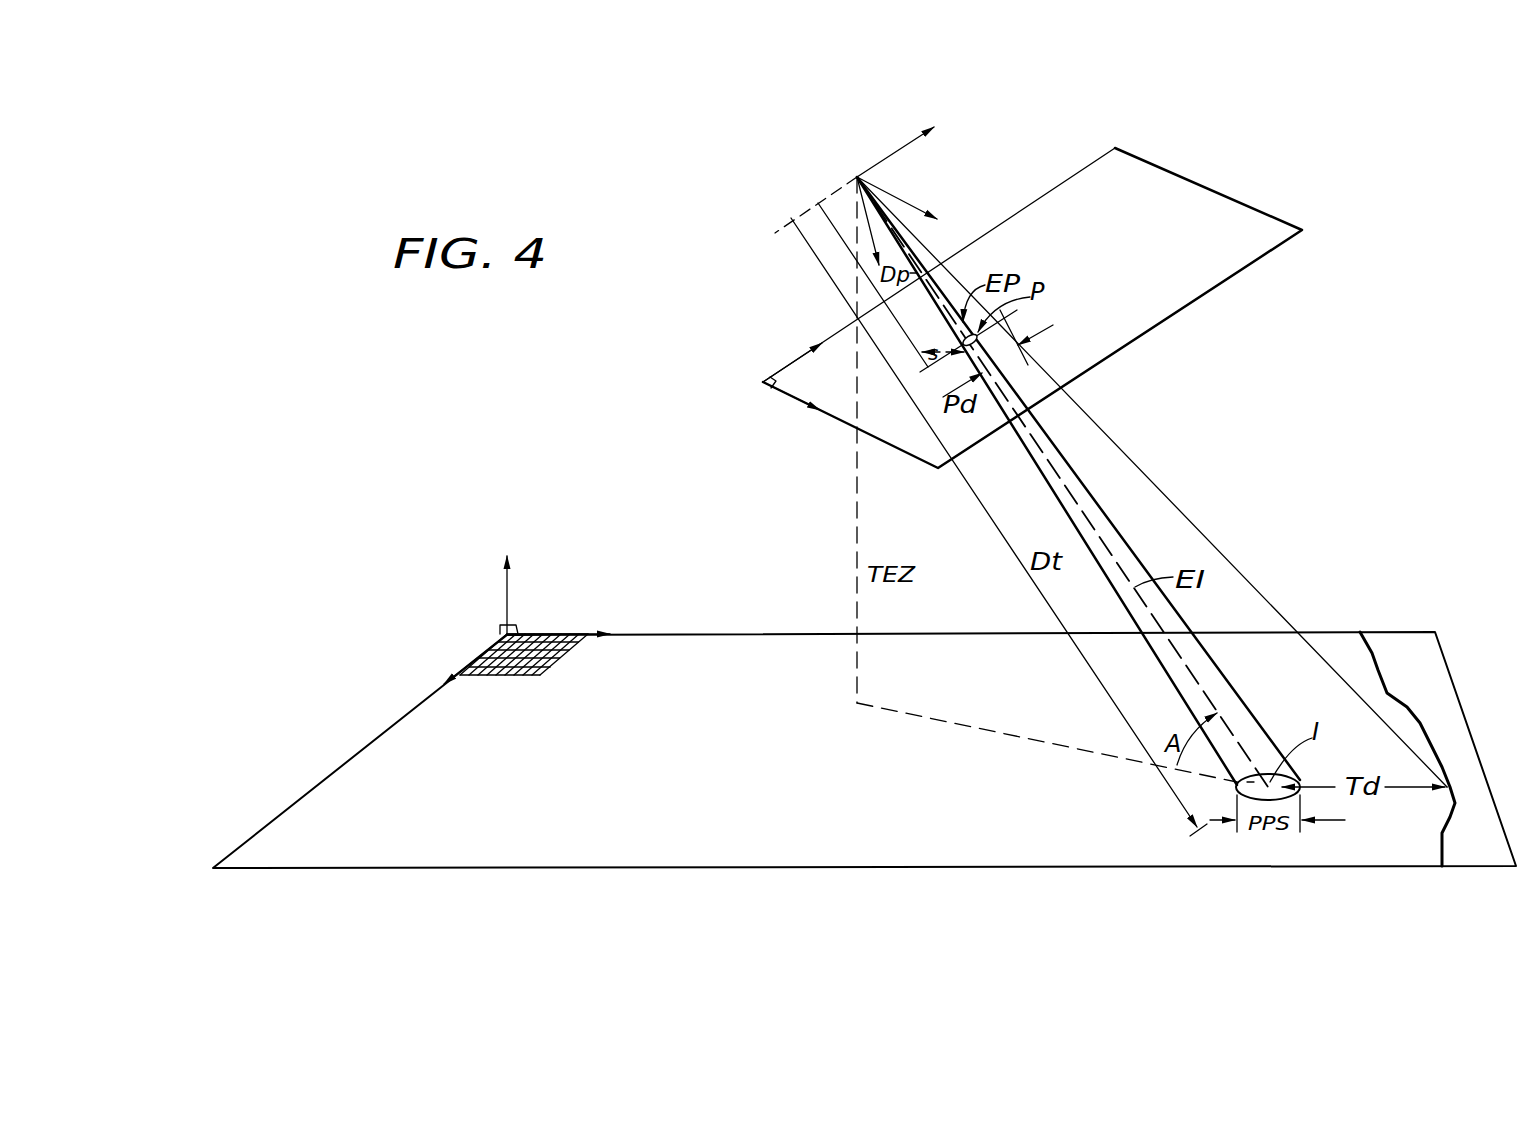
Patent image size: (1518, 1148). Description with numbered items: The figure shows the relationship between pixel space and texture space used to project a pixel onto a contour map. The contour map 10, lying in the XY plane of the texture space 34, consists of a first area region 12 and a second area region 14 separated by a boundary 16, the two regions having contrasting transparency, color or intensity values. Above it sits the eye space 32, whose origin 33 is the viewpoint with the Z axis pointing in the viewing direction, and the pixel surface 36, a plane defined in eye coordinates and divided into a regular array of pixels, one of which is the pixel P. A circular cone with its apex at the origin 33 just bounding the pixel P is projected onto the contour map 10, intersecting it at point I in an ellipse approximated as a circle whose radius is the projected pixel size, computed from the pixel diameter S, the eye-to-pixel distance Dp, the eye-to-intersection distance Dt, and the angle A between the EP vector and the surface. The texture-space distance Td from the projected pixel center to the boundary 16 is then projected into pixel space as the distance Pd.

The contour map 10 is at (864, 750).
The first area region 12 is at (983, 690).
The second area region 14 is at (1438, 694).
The boundary 16 is at (1372, 653).
The eye space 32 is at (773, 190).
The origin 33 is at (857, 177).
The texture space 34 is at (427, 619).
The pixel surface 36 is at (1032, 308).